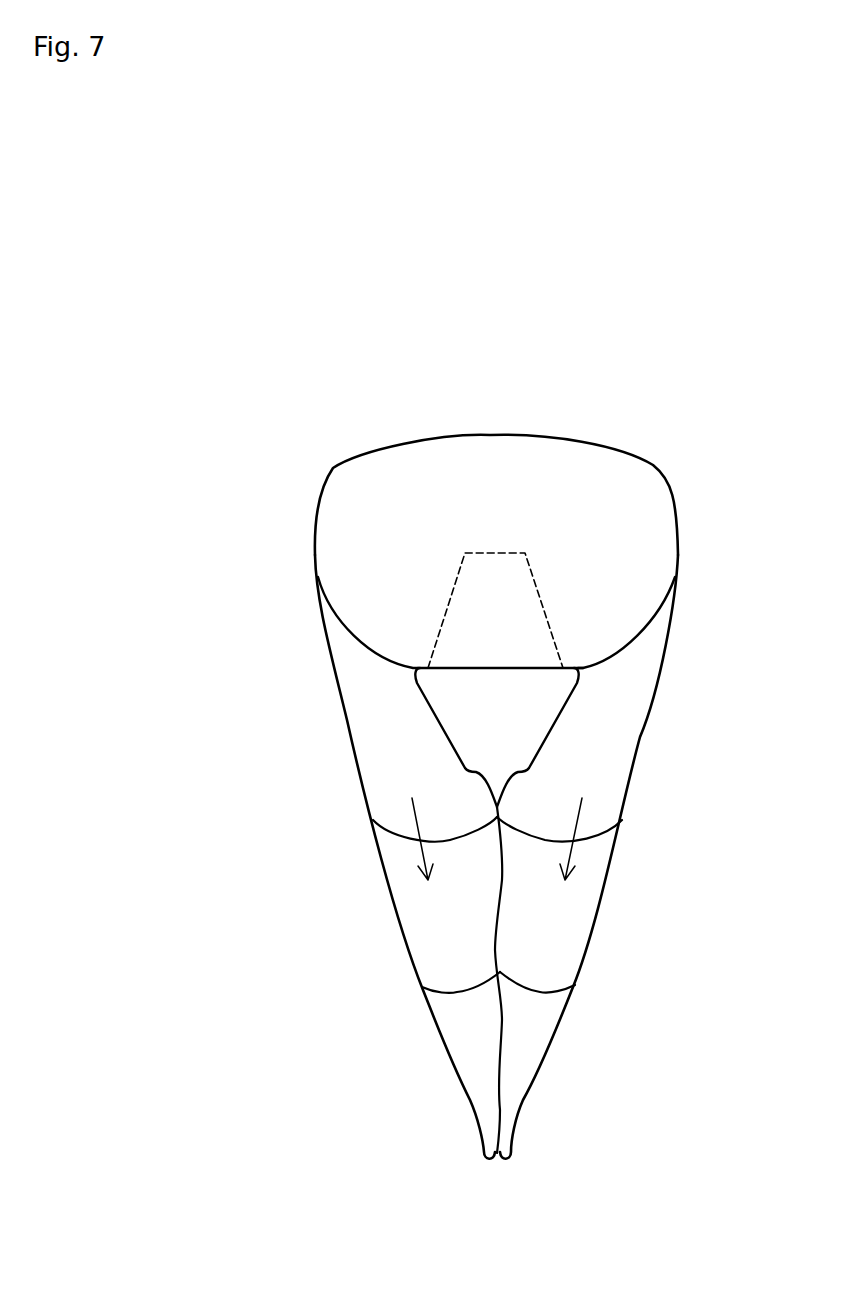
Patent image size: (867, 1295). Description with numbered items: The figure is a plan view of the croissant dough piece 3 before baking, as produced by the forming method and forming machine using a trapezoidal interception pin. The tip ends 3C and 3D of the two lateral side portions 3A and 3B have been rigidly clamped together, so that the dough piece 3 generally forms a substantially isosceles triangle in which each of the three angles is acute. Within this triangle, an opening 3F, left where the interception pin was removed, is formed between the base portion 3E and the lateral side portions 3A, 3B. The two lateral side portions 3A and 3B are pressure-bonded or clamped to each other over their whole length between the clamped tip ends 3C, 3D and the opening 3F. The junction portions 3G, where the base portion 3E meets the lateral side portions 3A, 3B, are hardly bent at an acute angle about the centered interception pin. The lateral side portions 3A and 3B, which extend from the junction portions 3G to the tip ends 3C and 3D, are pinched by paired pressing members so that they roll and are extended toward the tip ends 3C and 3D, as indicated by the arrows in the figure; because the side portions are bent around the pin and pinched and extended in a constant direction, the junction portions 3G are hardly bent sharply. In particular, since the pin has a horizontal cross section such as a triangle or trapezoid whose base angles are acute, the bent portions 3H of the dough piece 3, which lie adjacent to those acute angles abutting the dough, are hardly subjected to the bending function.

The croissant dough piece 3 is at (707, 529).
The lateral side portion 3A is at (588, 875).
The lateral side portion 3B is at (400, 880).
The tip end 3C is at (503, 1143).
The tip end 3D is at (487, 1140).
The base portion 3E is at (511, 518).
The opening 3F is at (513, 727).
The junction portion 3G is at (355, 520).
The bent portion 3H is at (407, 682).